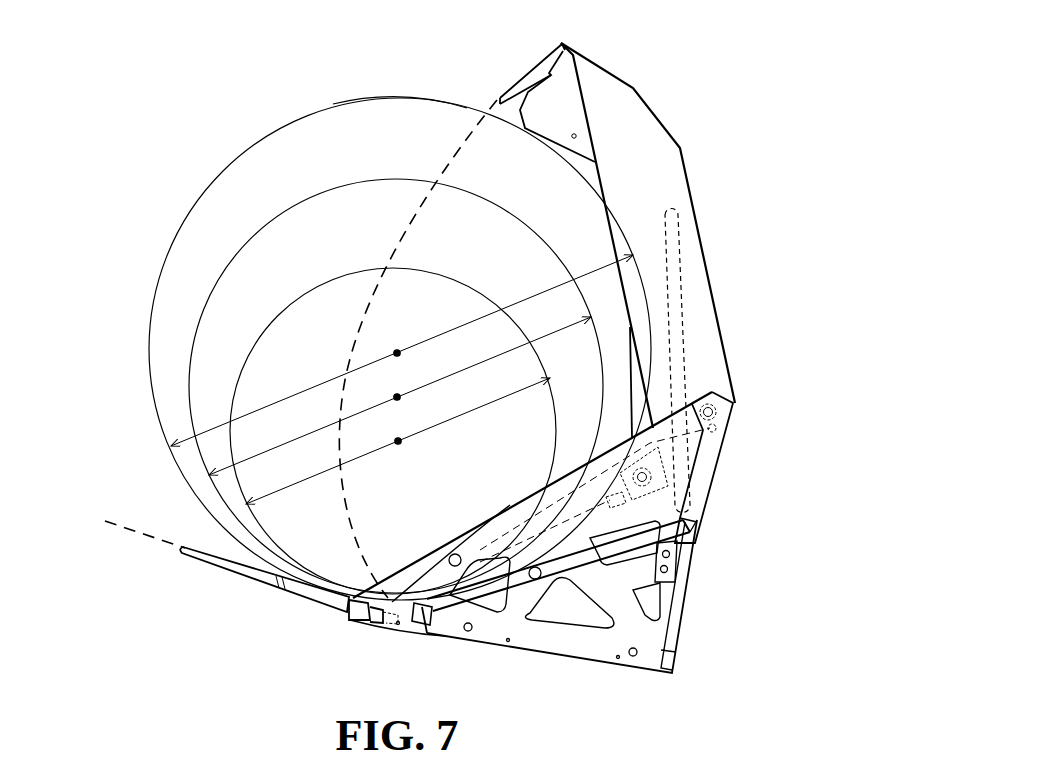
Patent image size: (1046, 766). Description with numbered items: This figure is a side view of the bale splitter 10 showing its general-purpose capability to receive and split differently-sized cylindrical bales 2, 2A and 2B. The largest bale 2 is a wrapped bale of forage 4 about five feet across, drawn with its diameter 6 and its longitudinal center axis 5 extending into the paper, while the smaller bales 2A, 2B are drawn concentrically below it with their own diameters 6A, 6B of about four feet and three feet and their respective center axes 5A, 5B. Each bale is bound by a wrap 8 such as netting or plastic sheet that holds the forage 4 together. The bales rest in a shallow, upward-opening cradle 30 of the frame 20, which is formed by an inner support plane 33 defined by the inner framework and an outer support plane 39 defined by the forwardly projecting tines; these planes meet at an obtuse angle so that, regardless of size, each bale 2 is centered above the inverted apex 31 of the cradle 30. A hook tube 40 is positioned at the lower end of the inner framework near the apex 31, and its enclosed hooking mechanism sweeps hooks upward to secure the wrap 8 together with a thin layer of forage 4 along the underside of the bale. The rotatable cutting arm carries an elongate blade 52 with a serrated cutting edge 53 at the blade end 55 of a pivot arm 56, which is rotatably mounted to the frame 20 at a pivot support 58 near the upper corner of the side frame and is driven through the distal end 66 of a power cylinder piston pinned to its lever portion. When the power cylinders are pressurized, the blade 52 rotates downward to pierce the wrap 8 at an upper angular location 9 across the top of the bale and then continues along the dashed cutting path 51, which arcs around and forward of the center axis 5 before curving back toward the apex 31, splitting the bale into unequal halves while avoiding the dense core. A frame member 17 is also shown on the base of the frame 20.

The bale splitter 10 is at (108, 93).
The cylindrical bale 2 is at (235, 117).
The smaller bale 2A is at (197, 277).
The smaller bale 2B is at (223, 373).
The forage 4 is at (230, 195).
The longitudinal center axis 5 is at (397, 353).
The center axis of smaller bale 5A is at (397, 397).
The center axis of smaller bale 5B is at (398, 441).
The diameter 6 is at (313, 386).
The diameter 6A is at (313, 434).
The diameter 6B is at (331, 472).
The wrap 8 is at (333, 104).
The upper angular location 9 is at (481, 94).
The cutting path 51 is at (447, 140).
The elongate blade 52 is at (500, 100).
The serrated cutting edge 53 is at (493, 125).
The blade end 55 is at (630, 52).
The pivot arm 56 is at (690, 181).
The pivot support 58 is at (718, 393).
The distal end of drive piston 66 is at (632, 470).
The inner support plane 33 is at (705, 515).
The frame 20 is at (750, 598).
The frame member 17 is at (436, 613).
The hook tube 40 is at (429, 620).
The cradle 30 is at (312, 628).
The inverted apex 31 is at (383, 642).
The outer support plane 39 is at (108, 518).